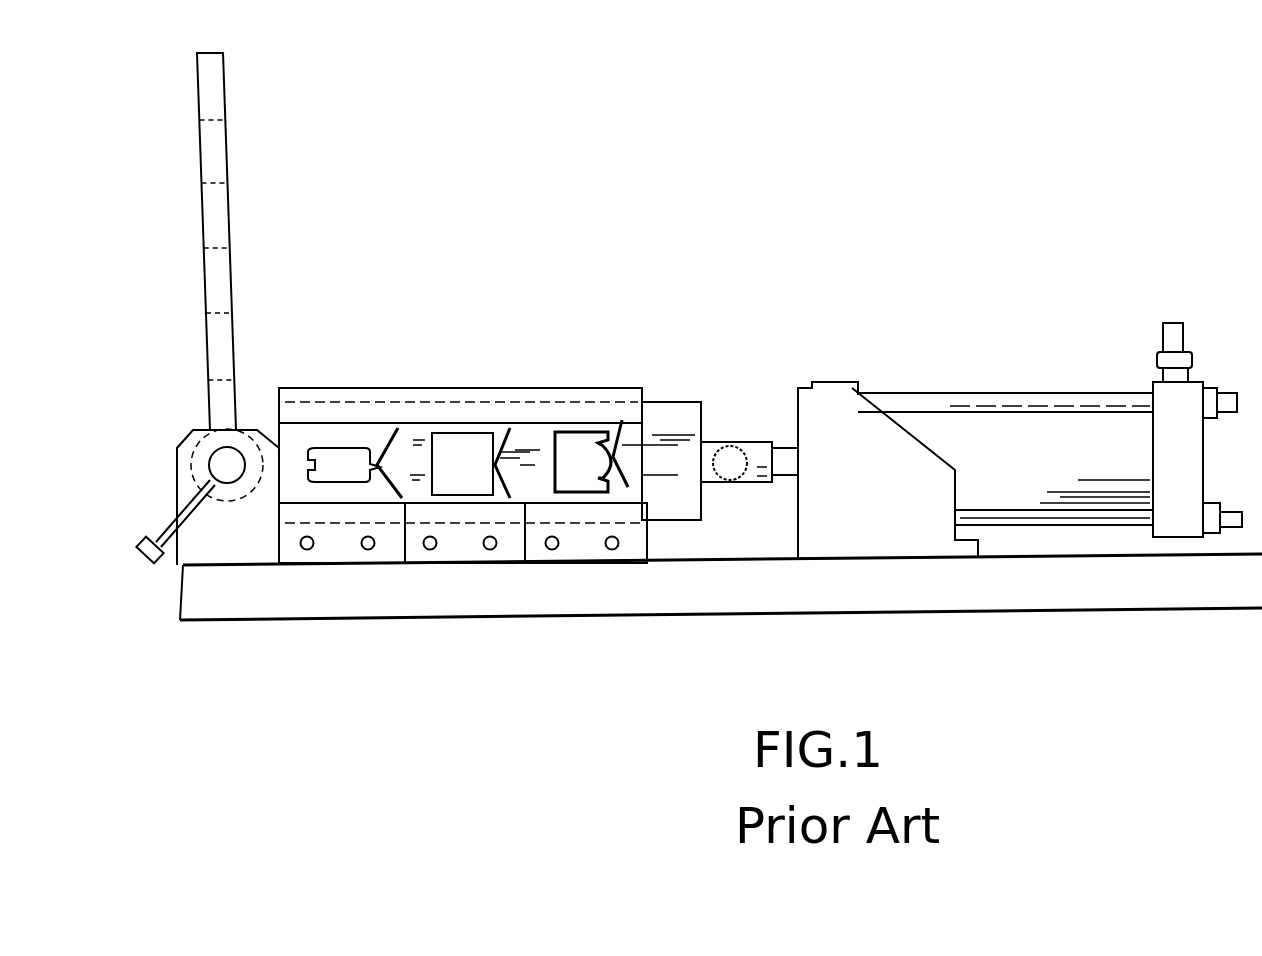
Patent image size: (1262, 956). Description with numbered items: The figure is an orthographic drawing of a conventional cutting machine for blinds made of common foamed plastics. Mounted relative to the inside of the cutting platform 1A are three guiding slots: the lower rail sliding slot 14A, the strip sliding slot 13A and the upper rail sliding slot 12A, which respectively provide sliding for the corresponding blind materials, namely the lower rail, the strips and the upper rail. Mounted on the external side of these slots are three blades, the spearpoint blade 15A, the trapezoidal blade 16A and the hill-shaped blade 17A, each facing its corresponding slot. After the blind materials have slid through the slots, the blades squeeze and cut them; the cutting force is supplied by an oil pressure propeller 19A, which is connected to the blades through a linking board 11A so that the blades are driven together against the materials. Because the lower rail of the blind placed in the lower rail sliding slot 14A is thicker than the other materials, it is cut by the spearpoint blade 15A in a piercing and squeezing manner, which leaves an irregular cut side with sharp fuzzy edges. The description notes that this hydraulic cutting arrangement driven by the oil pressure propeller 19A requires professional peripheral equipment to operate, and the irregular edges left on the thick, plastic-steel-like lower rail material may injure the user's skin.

The cutting platform 1A is at (303, 390).
The linking board 11A is at (690, 403).
The upper rail sliding slot 12A is at (583, 503).
The strip sliding slot 13A is at (465, 497).
The lower rail sliding slot 14A is at (338, 482).
The spearpoint blade 15A is at (400, 455).
The trapezoidal blade 16A is at (505, 458).
The hill-shaped blade 17A is at (643, 440).
The oil pressure propeller 19A is at (1037, 440).